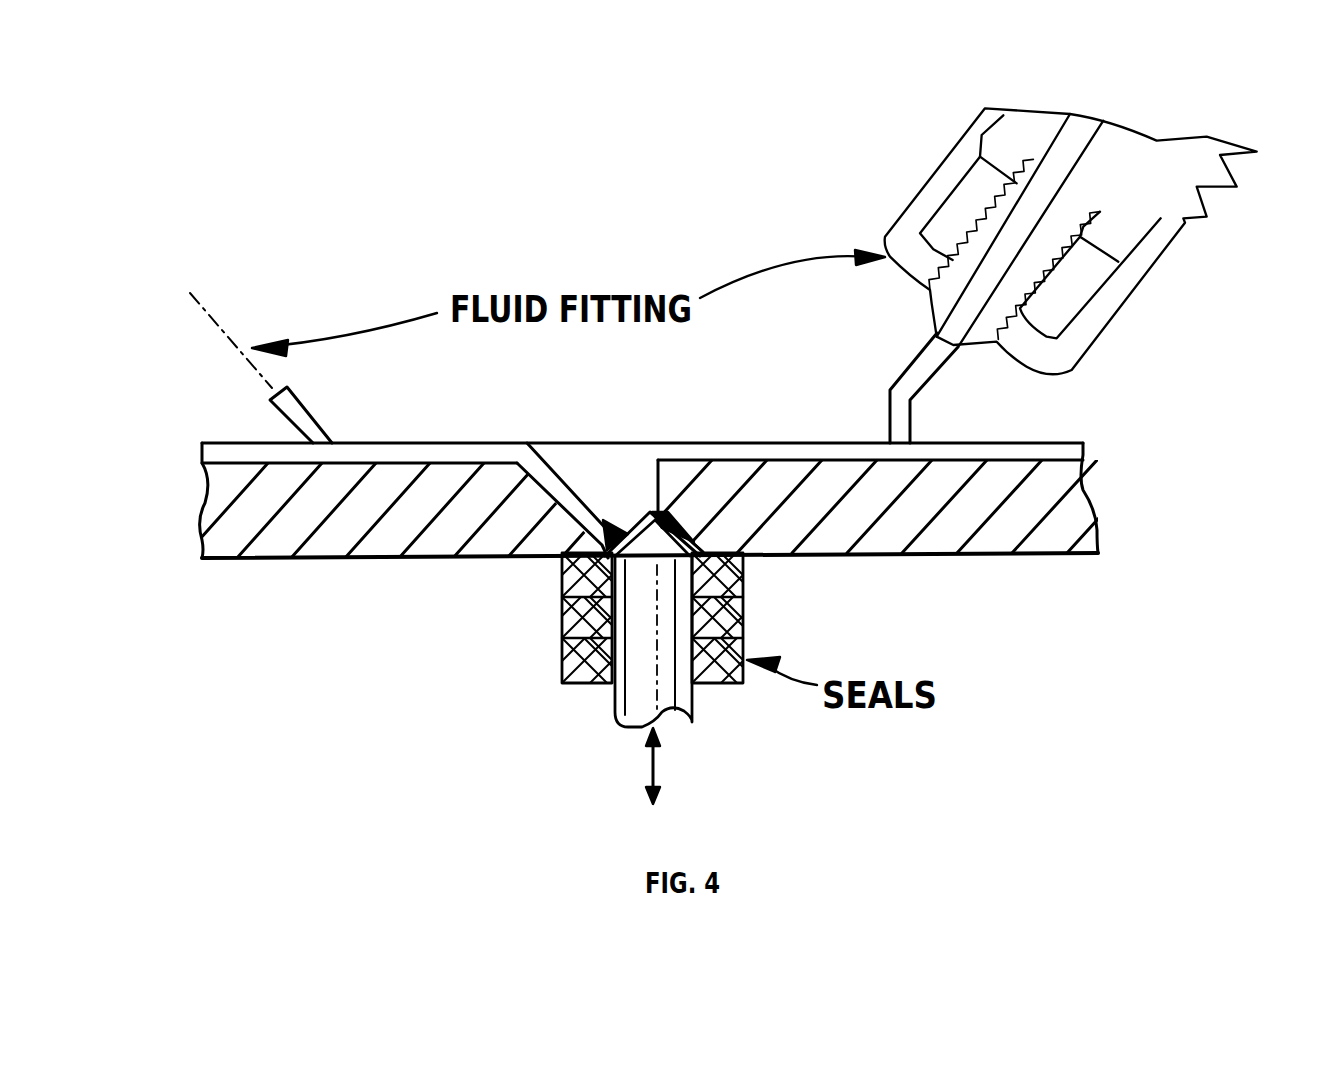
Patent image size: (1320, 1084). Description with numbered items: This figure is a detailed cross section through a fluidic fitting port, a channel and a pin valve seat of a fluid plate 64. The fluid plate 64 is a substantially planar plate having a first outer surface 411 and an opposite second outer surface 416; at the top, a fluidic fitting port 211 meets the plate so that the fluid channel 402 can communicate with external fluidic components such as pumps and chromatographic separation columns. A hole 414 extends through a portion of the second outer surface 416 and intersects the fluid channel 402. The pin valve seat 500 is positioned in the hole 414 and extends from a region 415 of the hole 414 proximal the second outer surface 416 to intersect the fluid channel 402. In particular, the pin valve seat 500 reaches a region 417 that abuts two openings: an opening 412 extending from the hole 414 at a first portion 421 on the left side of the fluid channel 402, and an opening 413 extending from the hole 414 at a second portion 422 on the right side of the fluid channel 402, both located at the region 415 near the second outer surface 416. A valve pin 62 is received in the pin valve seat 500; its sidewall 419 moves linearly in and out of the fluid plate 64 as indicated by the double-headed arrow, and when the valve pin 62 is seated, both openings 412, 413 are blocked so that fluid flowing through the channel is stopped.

The fluid plate 64 is at (280, 560).
The fluid channel 402 is at (458, 470).
The first portion 421 is at (478, 458).
The first outer surface 411 is at (560, 446).
The opening 412 is at (603, 516).
The region 417 is at (612, 505).
The opening 413 is at (641, 510).
The second portion 422 is at (724, 452).
The hole 414 is at (667, 507).
The region 415 is at (705, 556).
The pin valve seat 500 is at (703, 523).
The second outer surface 416 is at (947, 556).
The sidewall 419 is at (612, 695).
The valve pin 62 is at (676, 746).
The fluidic fitting port 211 is at (915, 408).